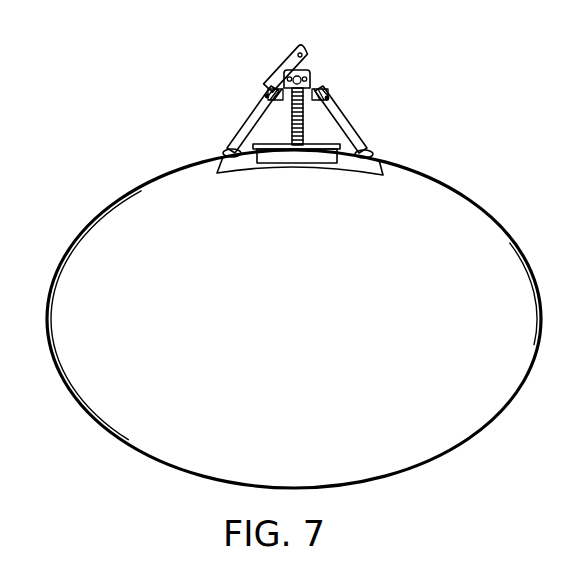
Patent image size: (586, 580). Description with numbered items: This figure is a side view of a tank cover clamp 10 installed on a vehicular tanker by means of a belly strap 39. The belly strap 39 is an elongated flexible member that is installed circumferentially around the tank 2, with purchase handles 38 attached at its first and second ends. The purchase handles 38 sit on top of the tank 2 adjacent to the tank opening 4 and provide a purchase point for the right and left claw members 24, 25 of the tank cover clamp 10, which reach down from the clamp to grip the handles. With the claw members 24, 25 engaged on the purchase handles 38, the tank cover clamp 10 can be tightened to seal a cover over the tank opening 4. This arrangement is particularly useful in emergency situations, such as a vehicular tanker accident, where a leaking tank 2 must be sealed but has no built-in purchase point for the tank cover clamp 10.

The tank 2 is at (523, 321).
The belly strap 39 is at (535, 347).
The tank cover clamp 10 is at (308, 30).
The left claw member 25 is at (254, 112).
The right claw member 24 is at (342, 107).
The purchase handles 38 is at (222, 150).
The tank opening 4 is at (297, 167).